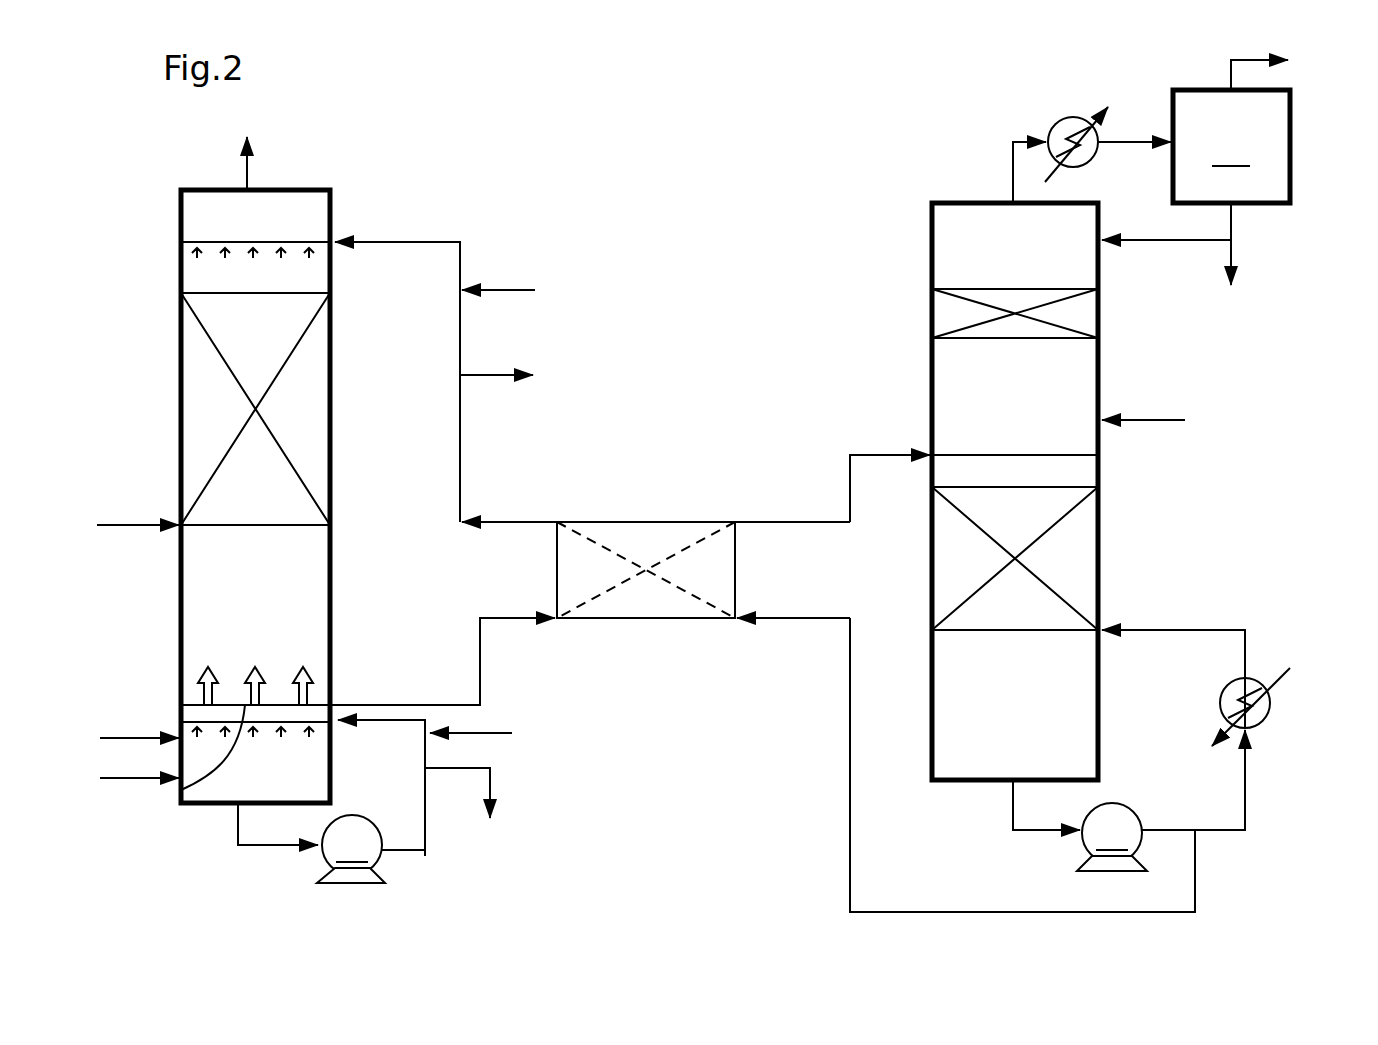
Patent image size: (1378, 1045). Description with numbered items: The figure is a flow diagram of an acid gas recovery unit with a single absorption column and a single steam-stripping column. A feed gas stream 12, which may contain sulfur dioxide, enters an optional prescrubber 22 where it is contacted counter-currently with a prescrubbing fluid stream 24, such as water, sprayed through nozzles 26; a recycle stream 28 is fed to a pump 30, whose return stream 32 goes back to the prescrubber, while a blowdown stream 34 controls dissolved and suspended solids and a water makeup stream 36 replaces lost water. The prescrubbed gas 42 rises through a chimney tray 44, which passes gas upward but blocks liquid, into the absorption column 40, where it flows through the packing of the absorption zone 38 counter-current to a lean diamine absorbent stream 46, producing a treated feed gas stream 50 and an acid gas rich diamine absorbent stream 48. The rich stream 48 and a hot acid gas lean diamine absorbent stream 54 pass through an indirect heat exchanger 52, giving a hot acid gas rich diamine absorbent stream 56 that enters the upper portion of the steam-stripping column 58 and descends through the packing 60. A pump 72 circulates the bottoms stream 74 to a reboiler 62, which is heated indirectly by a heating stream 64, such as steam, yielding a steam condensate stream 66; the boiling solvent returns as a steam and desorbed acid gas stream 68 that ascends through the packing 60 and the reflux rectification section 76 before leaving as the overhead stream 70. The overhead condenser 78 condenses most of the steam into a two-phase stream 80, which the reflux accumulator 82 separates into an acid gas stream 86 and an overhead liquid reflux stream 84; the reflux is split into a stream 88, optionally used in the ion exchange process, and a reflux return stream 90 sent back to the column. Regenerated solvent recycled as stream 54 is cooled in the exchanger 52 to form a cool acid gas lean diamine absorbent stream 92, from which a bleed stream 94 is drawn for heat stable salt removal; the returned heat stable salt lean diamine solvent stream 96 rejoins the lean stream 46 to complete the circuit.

The feed gas stream 12 is at (121, 738).
The prescrubber 22 is at (121, 778).
The prescrubbing fluid stream 24 is at (383, 722).
The nozzles 26 is at (181, 720).
The recycle stream 28 is at (238, 832).
The pump 30 is at (351, 849).
The return stream 32 is at (425, 833).
The blowdown stream 34 is at (492, 780).
The water makeup stream 36 is at (493, 733).
The absorption zone 38 is at (200, 408).
The absorption column 40 is at (116, 525).
The prescrubbed gas 42 is at (200, 690).
The chimney tray 44 is at (181, 790).
The lean diamine absorbent stream 46 is at (389, 242).
The acid gas rich diamine absorbent stream 48 is at (384, 705).
The treated feed gas stream 50 is at (247, 167).
The indirect heat exchanger 52 is at (620, 620).
The hot acid gas lean diamine absorbent stream 54 is at (850, 777).
The hot acid gas rich diamine absorbent stream 56 is at (885, 456).
The steam-stripping column 58 is at (1167, 421).
The packing 60 is at (1080, 555).
The reboiler 62 is at (1290, 717).
The heating stream 64 is at (1271, 682).
The steam condensate stream 66 is at (1229, 714).
The steam and desorbed acid gas stream 68 is at (1175, 630).
The overhead steam and acid gas stream 70 is at (1013, 165).
The pump 72 is at (1112, 837).
The bottoms stream 74 is at (1245, 812).
The reflux rectification section 76 is at (1080, 306).
The overhead condenser 78 is at (1062, 125).
The two-phase stream 80 is at (1136, 141).
The reflux accumulator 82 is at (1231, 146).
The overhead liquid reflux stream 84 is at (1233, 245).
The acid gas stream 86 is at (1285, 65).
The reflux split stream 88 is at (1236, 281).
The reflux return stream 90 is at (1162, 240).
The cool acid gas lean diamine absorbent stream 92 is at (508, 522).
The bleed stream 94 is at (521, 375).
The heat stable salt lean diamine solvent stream 96 is at (522, 290).